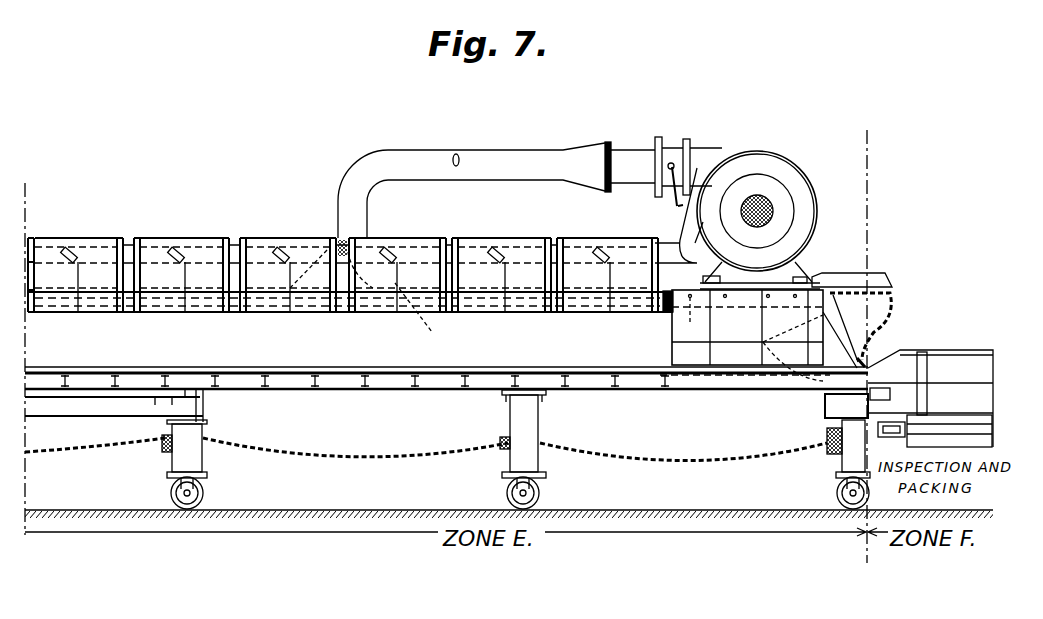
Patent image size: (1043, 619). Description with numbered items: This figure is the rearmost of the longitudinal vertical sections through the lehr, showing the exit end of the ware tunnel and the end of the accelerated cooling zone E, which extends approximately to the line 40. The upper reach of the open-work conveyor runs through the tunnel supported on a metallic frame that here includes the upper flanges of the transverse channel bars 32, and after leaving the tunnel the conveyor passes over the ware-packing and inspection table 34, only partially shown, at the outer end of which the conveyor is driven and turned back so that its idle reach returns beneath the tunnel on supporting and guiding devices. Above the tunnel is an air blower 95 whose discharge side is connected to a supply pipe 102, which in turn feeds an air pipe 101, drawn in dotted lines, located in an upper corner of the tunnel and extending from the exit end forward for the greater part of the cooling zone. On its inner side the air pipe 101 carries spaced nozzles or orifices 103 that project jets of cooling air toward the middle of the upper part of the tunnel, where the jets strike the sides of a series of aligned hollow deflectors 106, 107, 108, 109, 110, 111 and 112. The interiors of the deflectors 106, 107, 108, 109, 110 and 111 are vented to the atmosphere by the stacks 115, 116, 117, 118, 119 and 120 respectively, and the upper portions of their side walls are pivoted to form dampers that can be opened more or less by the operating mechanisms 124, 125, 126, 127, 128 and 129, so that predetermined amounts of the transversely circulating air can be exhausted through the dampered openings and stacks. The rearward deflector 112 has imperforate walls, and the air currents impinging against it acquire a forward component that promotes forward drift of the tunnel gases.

The transverse channel bars 32 is at (465, 368).
The ware-packing and inspection table 34 is at (950, 392).
The line 40 is at (870, 181).
The air blower 95 is at (782, 164).
The air pipe 101 is at (216, 313).
The supply pipe 102 is at (490, 162).
The nozzles or orifices 103 is at (556, 314).
The deflector 106 is at (55, 313).
The deflector 107 is at (168, 313).
The deflector 108 is at (282, 313).
The deflector 109 is at (375, 313).
The deflector 110 is at (483, 313).
The deflector 111 is at (597, 313).
The rearward deflector 112 is at (673, 313).
The vent or stack 115 is at (118, 248).
The vent or stack 116 is at (226, 256).
The vent or stack 117 is at (335, 258).
The vent or stack 118 is at (443, 255).
The vent or stack 119 is at (548, 258).
The vent or stack 120 is at (655, 258).
The operating mechanism 124 is at (78, 284).
The operating mechanism 125 is at (185, 284).
The operating mechanism 126 is at (289, 284).
The operating mechanism 127 is at (397, 284).
The operating mechanism 128 is at (505, 284).
The operating mechanism 129 is at (610, 284).